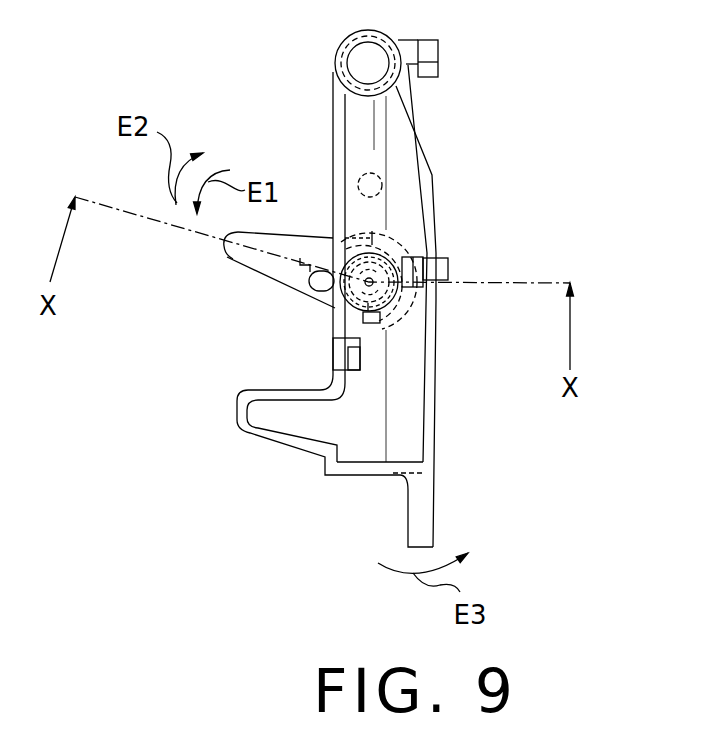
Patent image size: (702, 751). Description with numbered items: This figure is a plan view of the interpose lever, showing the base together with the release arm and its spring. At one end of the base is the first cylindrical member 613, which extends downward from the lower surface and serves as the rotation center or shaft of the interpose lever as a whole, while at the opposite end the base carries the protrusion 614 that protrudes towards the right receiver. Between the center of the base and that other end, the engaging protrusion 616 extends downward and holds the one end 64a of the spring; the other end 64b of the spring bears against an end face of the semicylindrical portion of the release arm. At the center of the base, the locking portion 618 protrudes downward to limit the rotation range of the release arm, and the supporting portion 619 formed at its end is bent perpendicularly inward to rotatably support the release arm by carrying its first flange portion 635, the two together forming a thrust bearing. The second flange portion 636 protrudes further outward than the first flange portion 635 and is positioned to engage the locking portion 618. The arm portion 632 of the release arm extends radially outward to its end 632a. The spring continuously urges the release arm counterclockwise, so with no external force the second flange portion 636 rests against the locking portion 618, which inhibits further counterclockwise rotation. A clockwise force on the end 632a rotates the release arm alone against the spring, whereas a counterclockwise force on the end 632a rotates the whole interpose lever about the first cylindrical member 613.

The first cylindrical member 613 is at (347, 45).
The protrusion 614 is at (248, 440).
The engaging protrusion 616 is at (333, 355).
The locking portion 618 is at (448, 274).
The supporting portion 619 is at (433, 250).
The arm portion 632 is at (243, 266).
The end of the arm portion 632a is at (227, 250).
The first flange portion 635 is at (378, 235).
The second flange portion 636 is at (438, 318).
The one end of the spring 64a is at (352, 362).
The other end of the spring 64b is at (363, 327).